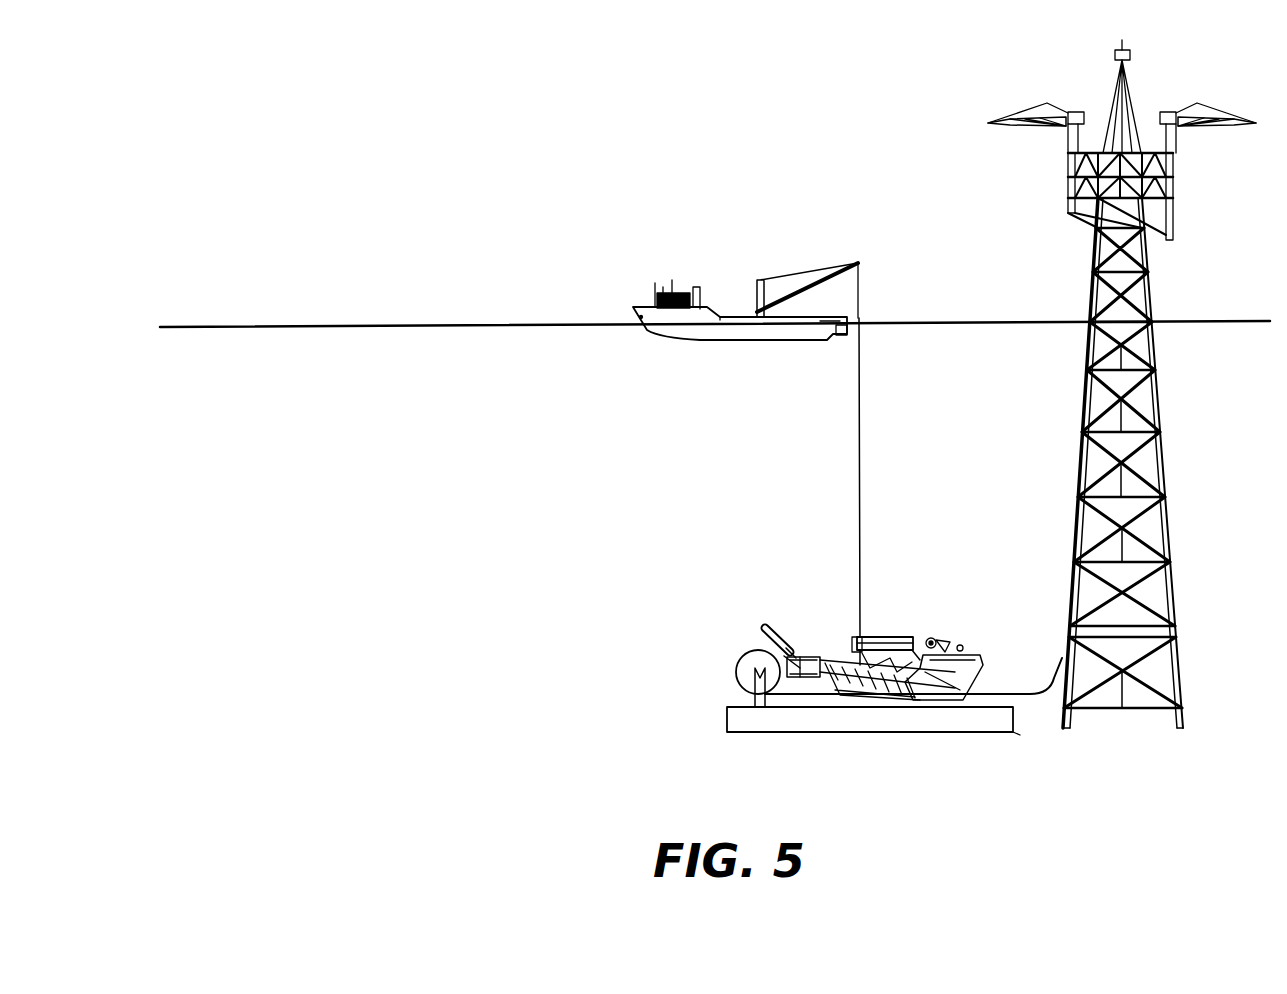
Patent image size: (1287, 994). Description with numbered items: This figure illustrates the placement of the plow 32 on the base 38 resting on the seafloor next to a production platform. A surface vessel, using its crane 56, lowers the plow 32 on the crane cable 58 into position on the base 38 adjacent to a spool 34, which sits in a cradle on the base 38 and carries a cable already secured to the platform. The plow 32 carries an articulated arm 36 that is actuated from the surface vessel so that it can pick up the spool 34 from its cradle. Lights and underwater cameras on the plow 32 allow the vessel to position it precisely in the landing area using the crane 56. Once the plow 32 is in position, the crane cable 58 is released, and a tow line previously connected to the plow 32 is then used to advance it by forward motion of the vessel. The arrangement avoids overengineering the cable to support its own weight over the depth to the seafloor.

The plow 32 is at (905, 640).
The spool 34 is at (736, 668).
The articulated arm 36 is at (787, 638).
The base 38 is at (1017, 732).
The crane 56 is at (794, 290).
The crane cable 58 is at (862, 460).